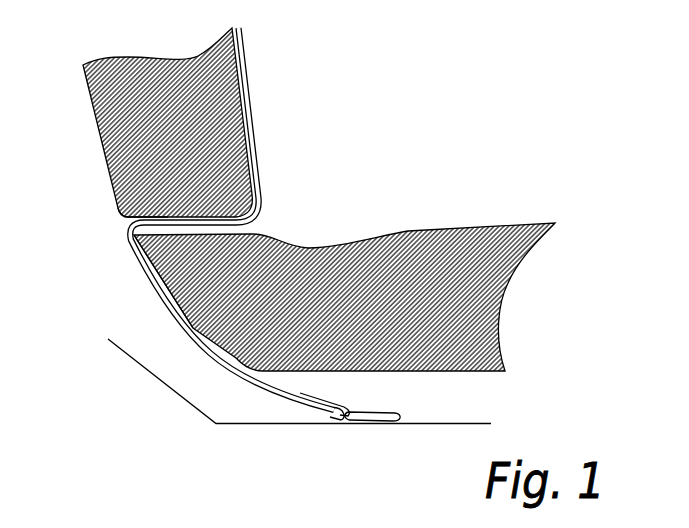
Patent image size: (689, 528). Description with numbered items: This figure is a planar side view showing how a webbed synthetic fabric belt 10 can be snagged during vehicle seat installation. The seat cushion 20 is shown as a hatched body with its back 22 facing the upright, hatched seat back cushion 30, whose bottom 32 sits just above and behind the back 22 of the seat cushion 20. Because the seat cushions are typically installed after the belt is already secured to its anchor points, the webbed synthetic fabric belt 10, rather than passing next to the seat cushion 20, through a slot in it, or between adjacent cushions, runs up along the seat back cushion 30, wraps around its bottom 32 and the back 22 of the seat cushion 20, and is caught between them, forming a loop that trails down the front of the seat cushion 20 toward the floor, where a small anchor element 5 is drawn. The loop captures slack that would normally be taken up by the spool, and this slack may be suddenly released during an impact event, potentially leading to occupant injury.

The floor tab 5 is at (367, 413).
The webbed synthetic fabric belt 10 is at (236, 49).
The seat cushion 20 is at (397, 258).
The back of the seat cushion 22 is at (193, 296).
The seat back cushion 30 is at (124, 123).
The bottom of the seat back cushion 32 is at (152, 195).